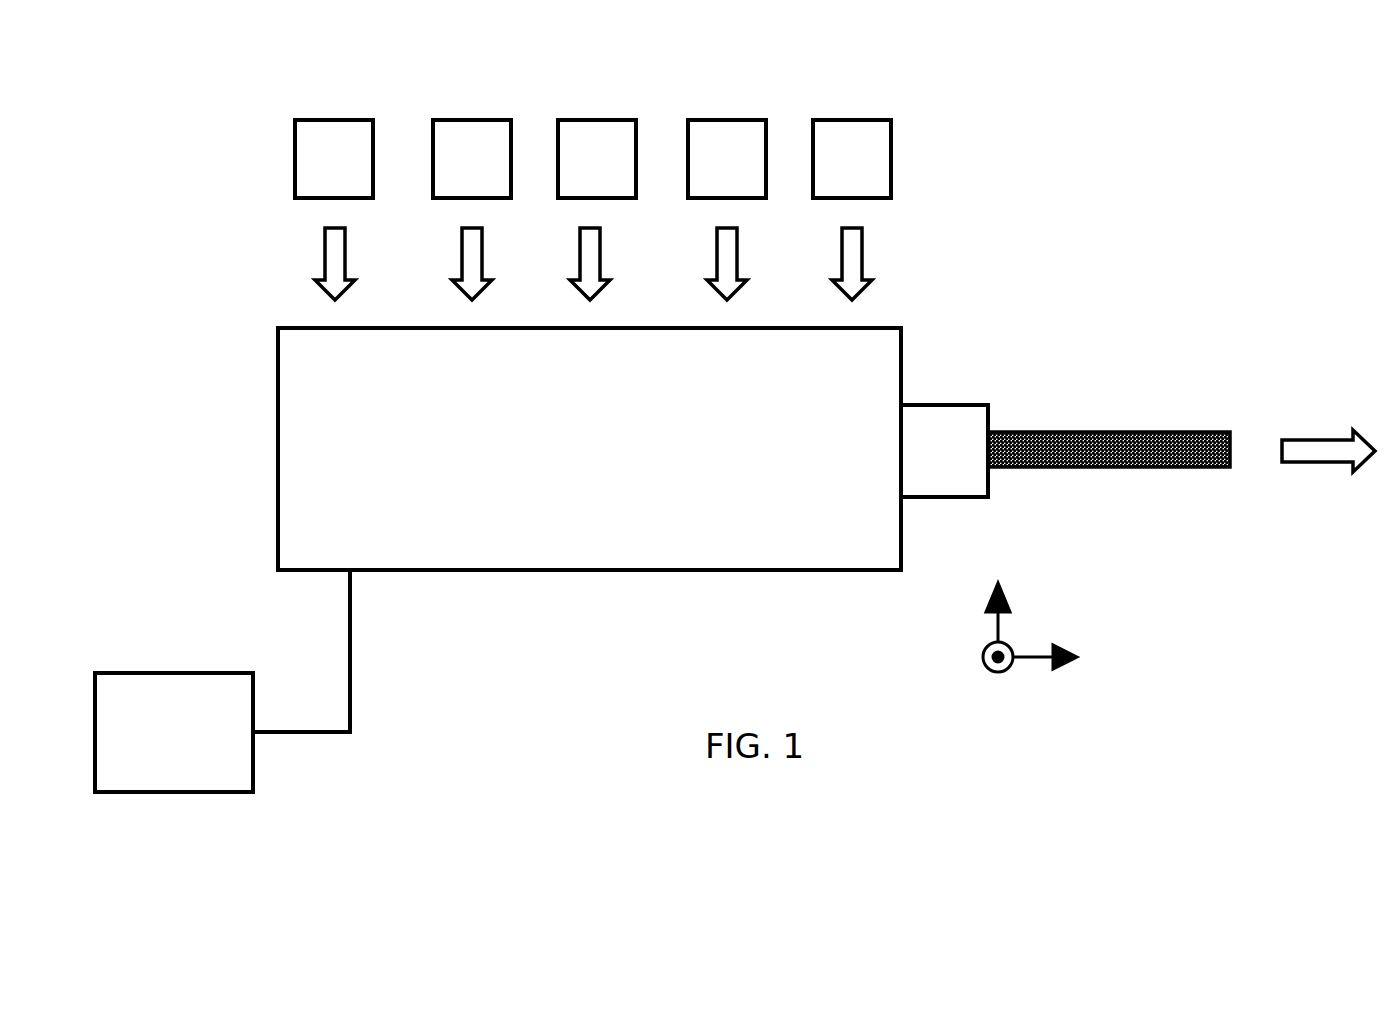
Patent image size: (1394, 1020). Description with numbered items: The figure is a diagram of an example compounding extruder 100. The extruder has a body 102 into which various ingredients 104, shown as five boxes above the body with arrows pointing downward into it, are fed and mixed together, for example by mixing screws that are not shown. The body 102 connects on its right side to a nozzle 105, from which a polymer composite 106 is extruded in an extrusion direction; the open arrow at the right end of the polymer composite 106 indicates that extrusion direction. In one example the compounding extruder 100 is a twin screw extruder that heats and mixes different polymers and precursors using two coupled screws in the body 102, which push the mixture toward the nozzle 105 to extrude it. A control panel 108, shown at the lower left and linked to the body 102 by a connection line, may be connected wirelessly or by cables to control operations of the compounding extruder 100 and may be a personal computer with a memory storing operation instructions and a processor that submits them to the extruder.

The compounding extruder 100 is at (1140, 174).
The body 102 is at (589, 449).
The ingredients 104 is at (593, 210).
The nozzle 105 is at (946, 420).
The polymer composite 106 is at (1122, 450).
The control panel 108 is at (222, 681).